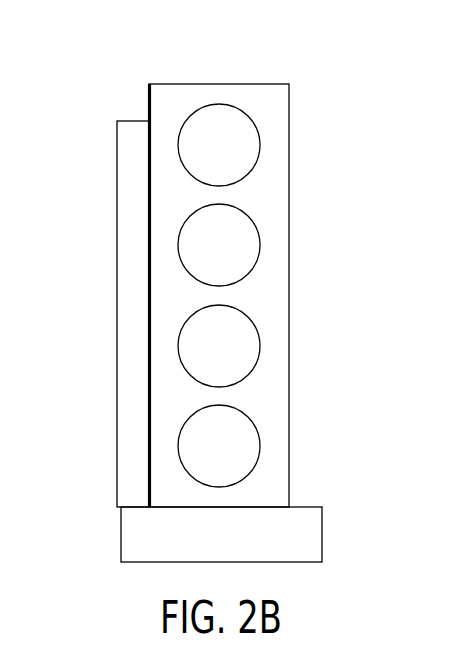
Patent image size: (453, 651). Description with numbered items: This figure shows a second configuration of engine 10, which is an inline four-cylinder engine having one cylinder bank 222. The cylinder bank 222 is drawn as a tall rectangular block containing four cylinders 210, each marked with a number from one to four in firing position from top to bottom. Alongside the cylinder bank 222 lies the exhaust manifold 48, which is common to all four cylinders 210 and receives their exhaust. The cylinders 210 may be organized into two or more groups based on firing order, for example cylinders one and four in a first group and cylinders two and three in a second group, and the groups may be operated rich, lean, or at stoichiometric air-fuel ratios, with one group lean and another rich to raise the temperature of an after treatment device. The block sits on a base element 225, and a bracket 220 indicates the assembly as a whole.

The engine 10 is at (208, 282).
The engine assembly 220 is at (206, 255).
The cylinder bank 222 is at (256, 270).
The cylinders 210 is at (260, 145).
The exhaust manifold 48 is at (135, 277).
The base / oil pan 225 is at (221, 534).